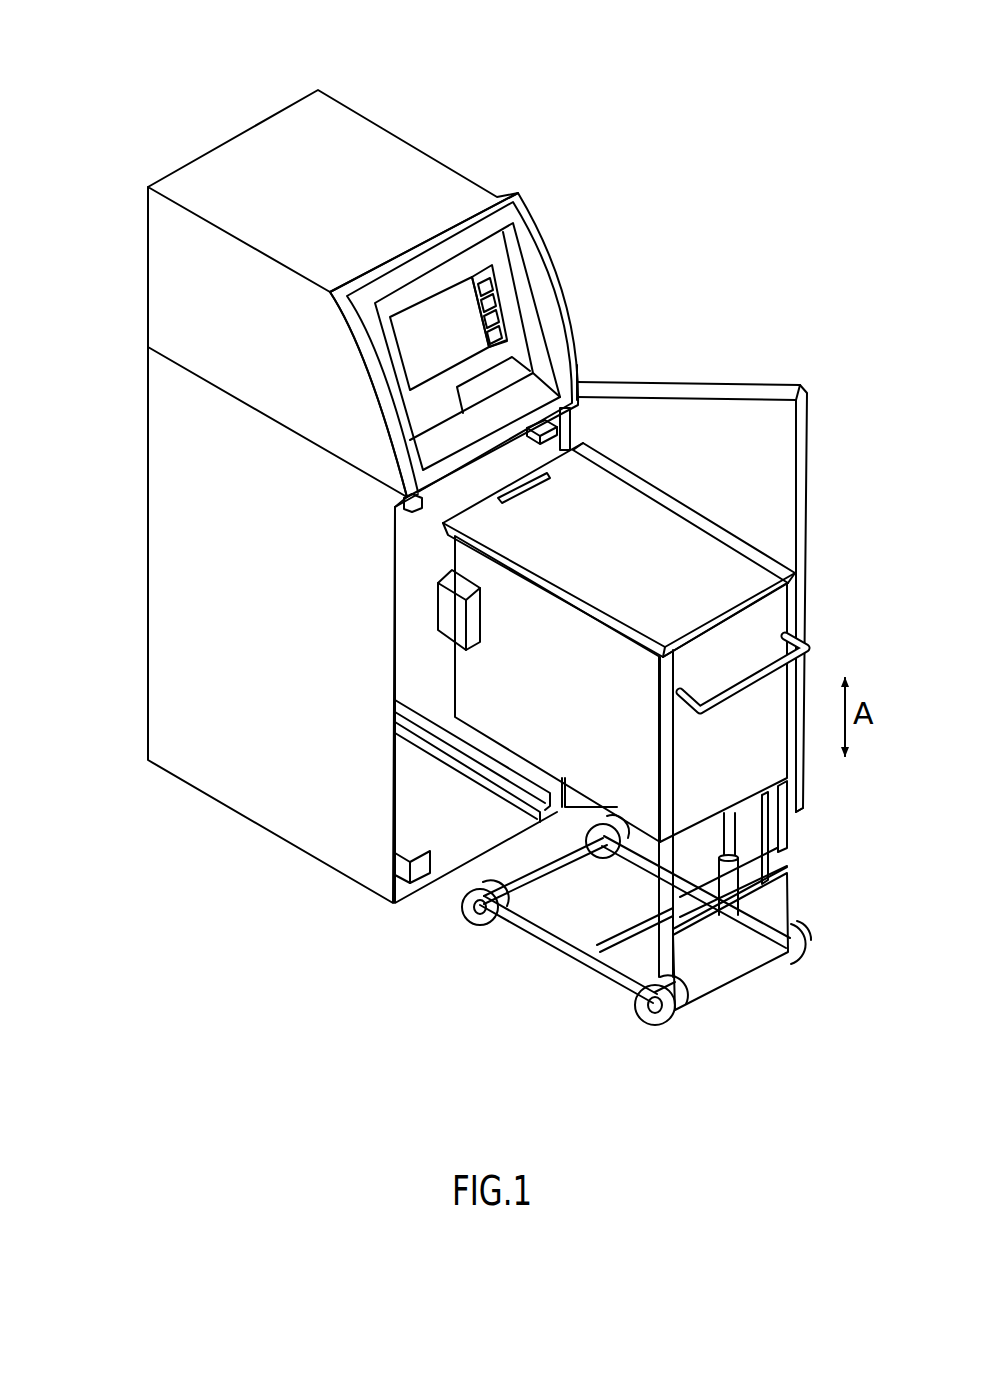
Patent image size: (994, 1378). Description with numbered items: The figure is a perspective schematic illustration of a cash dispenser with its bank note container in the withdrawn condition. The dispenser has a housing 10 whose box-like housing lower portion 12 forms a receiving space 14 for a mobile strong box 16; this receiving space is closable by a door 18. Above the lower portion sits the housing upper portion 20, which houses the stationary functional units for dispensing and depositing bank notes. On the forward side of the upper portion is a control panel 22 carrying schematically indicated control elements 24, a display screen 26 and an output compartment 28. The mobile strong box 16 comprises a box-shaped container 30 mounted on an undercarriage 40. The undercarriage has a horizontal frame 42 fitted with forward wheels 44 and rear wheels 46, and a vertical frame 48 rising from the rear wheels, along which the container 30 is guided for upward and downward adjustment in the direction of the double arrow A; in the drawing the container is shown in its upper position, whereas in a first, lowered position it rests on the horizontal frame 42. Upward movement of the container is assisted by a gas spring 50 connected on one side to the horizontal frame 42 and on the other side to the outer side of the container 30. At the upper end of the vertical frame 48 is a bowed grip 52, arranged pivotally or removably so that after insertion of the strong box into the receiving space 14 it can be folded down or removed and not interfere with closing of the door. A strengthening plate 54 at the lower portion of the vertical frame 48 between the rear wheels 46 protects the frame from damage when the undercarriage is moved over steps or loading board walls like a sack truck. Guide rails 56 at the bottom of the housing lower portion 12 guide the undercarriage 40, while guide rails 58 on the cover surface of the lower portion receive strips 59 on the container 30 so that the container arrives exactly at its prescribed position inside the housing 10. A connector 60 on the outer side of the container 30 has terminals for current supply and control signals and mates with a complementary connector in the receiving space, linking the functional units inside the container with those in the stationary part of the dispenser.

The housing 10 is at (386, 80).
The housing lower portion 12 is at (275, 845).
The receiving space 14 is at (405, 538).
The mobile strong box 16 is at (712, 497).
The door 18 is at (755, 385).
The housing upper portion 20 is at (130, 268).
The control panel 22 is at (541, 203).
The control elements 24 is at (480, 290).
The display screen 26 is at (468, 333).
The output compartment 28 is at (500, 375).
The container 30 is at (424, 677).
The undercarriage 40 is at (583, 1005).
The horizontal frame 42 is at (535, 927).
The forward wheels 44 is at (480, 926).
The rear wheels 46 is at (666, 1027).
The vertical frame 48 is at (780, 833).
The gas spring 50 is at (730, 873).
The bowed grip 52 is at (813, 648).
The strengthening plate 54 is at (732, 968).
The guide rails 56 is at (417, 873).
The guide rails 58 is at (575, 432).
The strips 59 is at (648, 488).
The connector 60 is at (440, 616).